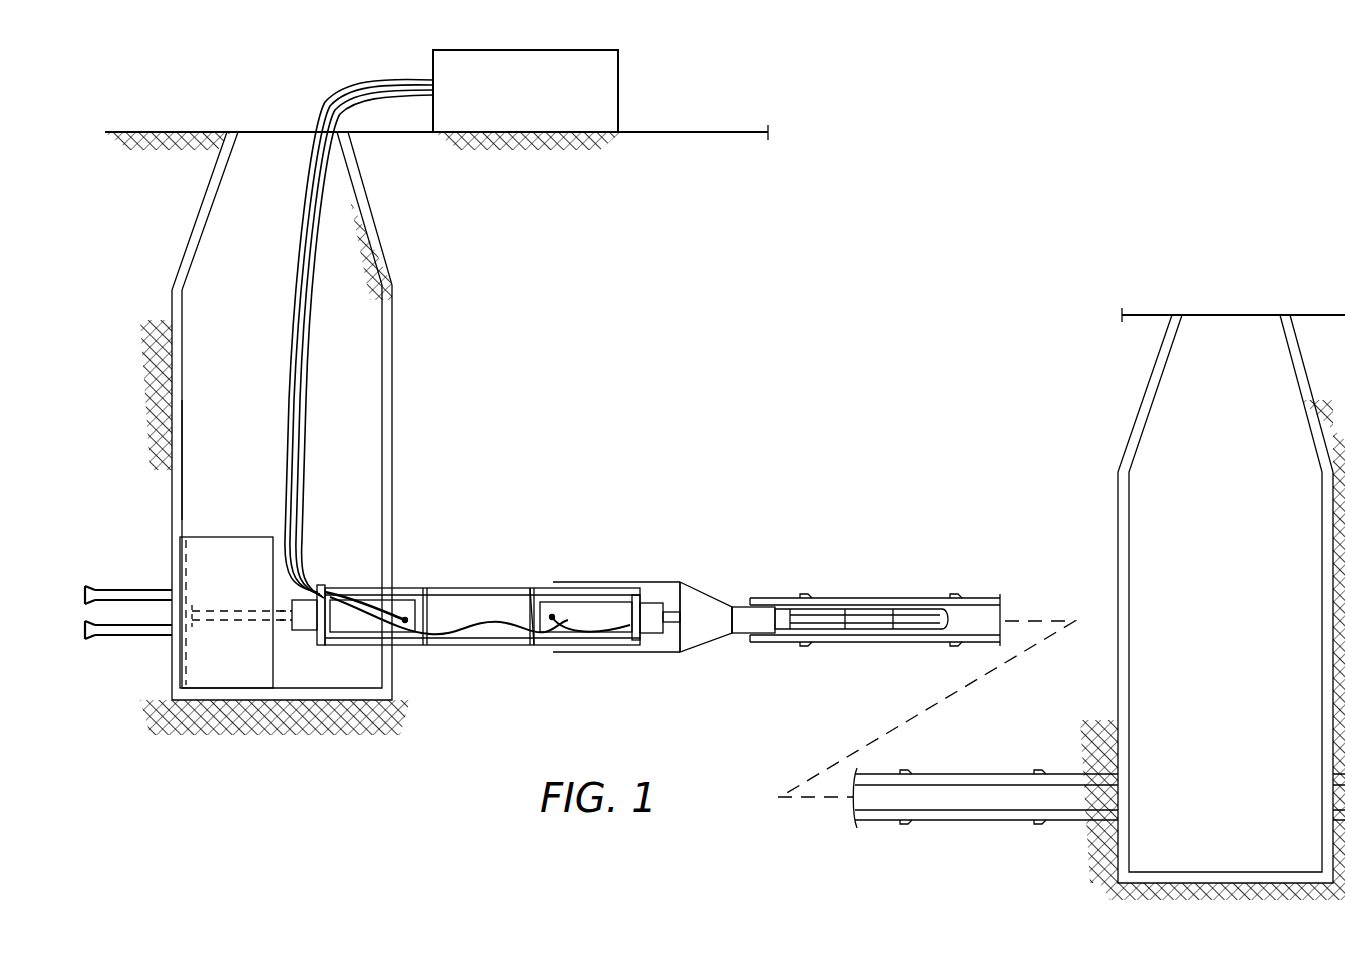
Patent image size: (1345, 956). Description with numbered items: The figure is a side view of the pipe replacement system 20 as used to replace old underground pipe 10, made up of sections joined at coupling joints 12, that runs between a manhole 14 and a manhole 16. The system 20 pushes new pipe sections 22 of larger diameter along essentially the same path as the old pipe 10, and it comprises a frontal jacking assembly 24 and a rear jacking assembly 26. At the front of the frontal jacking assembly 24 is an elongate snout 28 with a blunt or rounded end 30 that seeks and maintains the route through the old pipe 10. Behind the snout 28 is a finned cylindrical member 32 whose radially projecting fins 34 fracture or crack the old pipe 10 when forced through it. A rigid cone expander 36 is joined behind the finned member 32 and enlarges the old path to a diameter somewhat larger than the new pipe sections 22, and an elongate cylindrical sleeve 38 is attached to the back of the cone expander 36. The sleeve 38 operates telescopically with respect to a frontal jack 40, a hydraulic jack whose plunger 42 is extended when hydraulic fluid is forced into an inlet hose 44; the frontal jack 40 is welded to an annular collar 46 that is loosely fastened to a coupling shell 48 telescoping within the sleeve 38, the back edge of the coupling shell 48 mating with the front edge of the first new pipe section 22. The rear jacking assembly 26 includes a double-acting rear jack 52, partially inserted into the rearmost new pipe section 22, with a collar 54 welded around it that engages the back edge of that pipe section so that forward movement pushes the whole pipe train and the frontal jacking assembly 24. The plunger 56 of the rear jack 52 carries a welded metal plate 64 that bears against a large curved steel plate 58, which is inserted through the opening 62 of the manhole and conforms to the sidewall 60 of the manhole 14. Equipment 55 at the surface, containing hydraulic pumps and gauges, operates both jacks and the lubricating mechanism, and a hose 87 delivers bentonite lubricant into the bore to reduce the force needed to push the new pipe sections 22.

The old pipe 10 is at (878, 822).
The coupling joints 12 is at (905, 822).
The manhole 14 is at (212, 212).
The manhole 16 is at (1129, 507).
The pipe replacement system 20 is at (530, 472).
The new pipe sections 22 is at (418, 588).
The frontal jacking assembly 24 is at (652, 531).
The rear jacking assembly 26 is at (412, 530).
The snout 28 is at (868, 610).
The rounded end 30 is at (955, 606).
The finned cylindrical member 32 is at (757, 610).
The fins 34 is at (733, 636).
The cone expander 36 is at (705, 606).
The cylindrical sleeve 38 is at (620, 582).
The frontal jack 40 is at (593, 633).
The plunger 42 is at (672, 625).
The inlet hose 44 is at (534, 645).
The annular collar 46 is at (636, 640).
The coupling shell 48 is at (540, 588).
The rear jack 52 is at (303, 630).
The collar 54 is at (320, 588).
The equipment 55 is at (618, 92).
The plunger 56 is at (290, 612).
The steel plate 58 is at (228, 537).
The sidewall 60 is at (182, 460).
The opening 62 is at (245, 125).
The metal plate 64 is at (190, 600).
The hose 87 is at (466, 640).